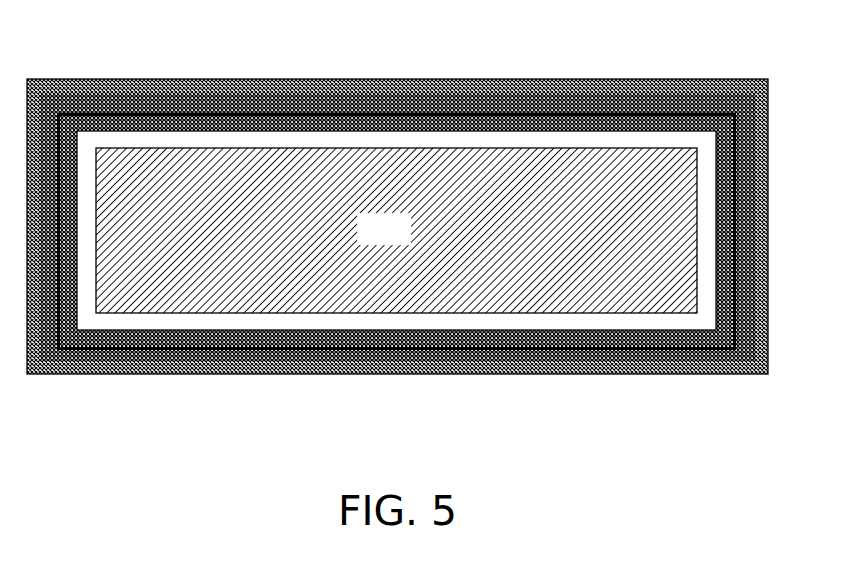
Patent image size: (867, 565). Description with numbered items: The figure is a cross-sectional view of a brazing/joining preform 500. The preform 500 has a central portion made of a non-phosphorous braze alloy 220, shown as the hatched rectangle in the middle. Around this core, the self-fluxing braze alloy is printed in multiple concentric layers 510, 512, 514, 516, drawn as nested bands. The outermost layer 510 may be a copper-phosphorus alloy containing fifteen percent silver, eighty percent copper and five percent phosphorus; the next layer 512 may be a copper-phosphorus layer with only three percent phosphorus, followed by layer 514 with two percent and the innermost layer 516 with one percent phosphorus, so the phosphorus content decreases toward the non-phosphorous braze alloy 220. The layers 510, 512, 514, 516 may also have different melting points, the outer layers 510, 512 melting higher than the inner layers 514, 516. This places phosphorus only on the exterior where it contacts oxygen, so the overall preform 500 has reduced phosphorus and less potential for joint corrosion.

The brazing preform 500 is at (397, 224).
The self-fluxing braze alloy layer 510 is at (387, 88).
The self-fluxing braze alloy layer 512 is at (595, 105).
The self-fluxing braze alloy layer 514 is at (662, 340).
The self-fluxing braze alloy layer 516 is at (165, 323).
The non-phosphorous braze alloy 220 is at (406, 242).